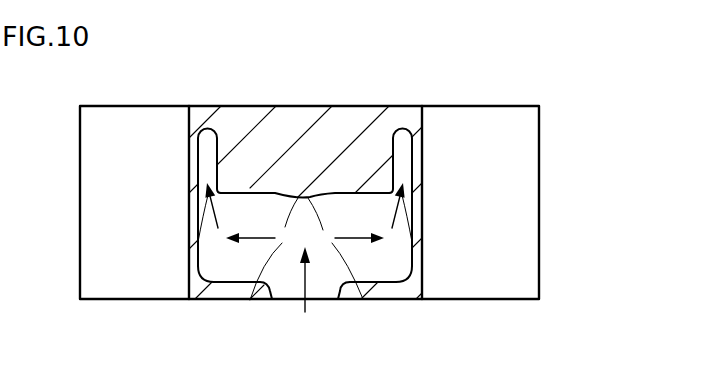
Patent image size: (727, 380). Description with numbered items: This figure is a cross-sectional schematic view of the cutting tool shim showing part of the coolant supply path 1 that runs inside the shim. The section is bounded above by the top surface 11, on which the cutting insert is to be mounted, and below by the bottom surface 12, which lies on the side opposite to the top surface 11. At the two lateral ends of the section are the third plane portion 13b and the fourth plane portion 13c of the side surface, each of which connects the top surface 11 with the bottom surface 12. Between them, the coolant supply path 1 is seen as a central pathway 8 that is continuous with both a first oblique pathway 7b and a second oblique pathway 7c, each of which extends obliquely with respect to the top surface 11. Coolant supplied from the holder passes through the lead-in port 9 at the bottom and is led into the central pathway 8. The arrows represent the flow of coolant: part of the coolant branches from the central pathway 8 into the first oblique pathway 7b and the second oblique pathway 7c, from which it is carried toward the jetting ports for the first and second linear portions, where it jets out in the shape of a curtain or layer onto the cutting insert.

The coolant supply path 1 is at (413, 62).
The first oblique pathway 7b is at (404, 142).
The second oblique pathway 7c is at (208, 152).
The central pathway 8 is at (253, 215).
The lead-in port 9 is at (318, 299).
The top surface 11 is at (207, 106).
The bottom surface 12 is at (206, 300).
The third plane portion 13b is at (500, 202).
The fourth plane portion 13c is at (122, 200).